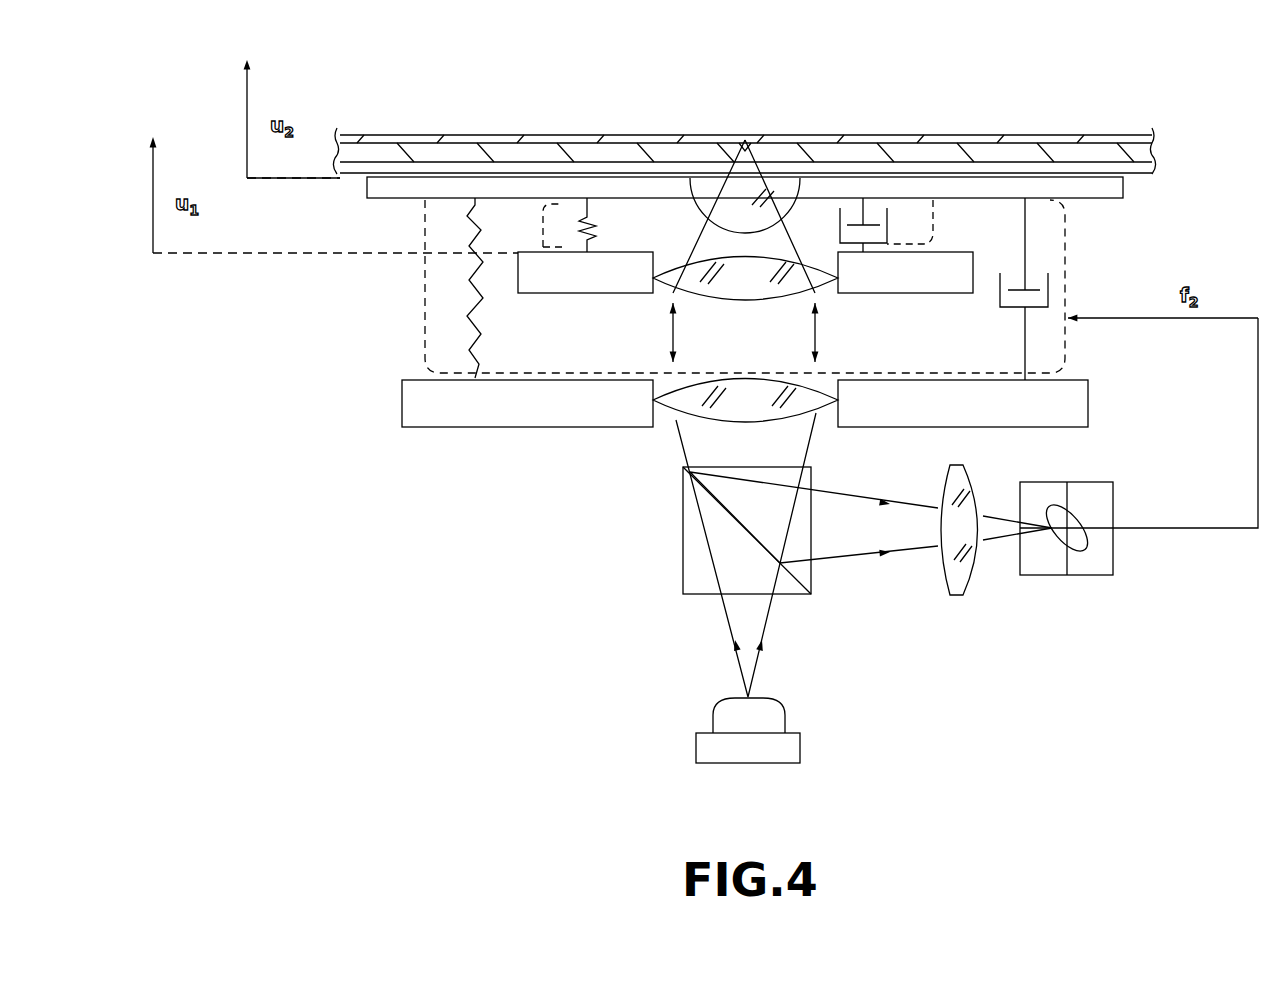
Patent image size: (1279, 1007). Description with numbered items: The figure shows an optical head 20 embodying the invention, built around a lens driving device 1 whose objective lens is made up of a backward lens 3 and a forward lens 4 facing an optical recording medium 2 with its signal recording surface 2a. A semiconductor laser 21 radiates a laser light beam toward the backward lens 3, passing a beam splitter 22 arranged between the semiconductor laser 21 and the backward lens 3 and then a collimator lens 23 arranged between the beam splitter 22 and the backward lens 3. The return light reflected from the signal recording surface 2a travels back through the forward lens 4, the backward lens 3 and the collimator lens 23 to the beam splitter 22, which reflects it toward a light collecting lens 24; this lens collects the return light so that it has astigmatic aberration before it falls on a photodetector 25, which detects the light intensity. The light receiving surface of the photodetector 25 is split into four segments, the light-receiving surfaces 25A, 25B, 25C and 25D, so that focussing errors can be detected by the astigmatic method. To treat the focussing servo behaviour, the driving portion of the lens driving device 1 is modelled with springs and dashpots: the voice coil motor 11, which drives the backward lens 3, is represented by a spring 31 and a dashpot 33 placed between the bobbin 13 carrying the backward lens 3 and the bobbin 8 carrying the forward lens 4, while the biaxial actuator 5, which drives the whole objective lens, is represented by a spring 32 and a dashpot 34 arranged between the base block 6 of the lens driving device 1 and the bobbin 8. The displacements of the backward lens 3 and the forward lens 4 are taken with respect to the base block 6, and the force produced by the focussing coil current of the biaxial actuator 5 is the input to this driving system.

The lens driving device 1 is at (400, 336).
The optical recording medium 2 is at (1090, 124).
The signal recording surface 2a is at (740, 146).
The backward lens 3 is at (820, 280).
The forward lens 4 is at (778, 187).
The biaxial actuator 5 is at (1065, 244).
The base block 6 is at (493, 416).
The bobbin 8 is at (1122, 185).
The voice coil motor 11 is at (936, 224).
The bobbin 13 is at (900, 278).
The optical head 20 is at (570, 518).
The semiconductor laser 21 is at (725, 752).
The beam splitter 22 is at (690, 548).
The collimator lens 23 is at (700, 410).
The light collecting lens 24 is at (957, 575).
The photodetector 25 is at (1079, 582).
The light-receiving surface 25A is at (1041, 488).
The light-receiving surface 25B is at (1100, 488).
The light-receiving surface 25C is at (1040, 570).
The light-receiving surface 25D is at (1115, 598).
The spring 31 is at (580, 217).
The spring 32 is at (477, 267).
The dashpot 33 is at (868, 222).
The dashpot 34 is at (1048, 291).